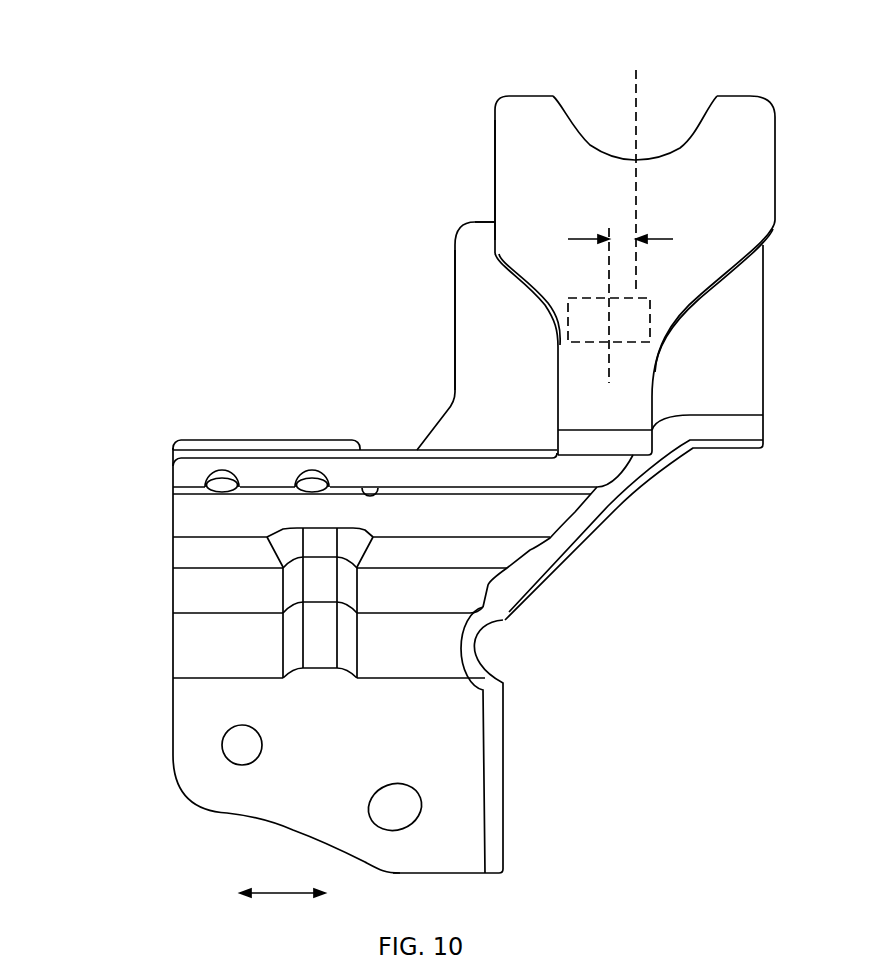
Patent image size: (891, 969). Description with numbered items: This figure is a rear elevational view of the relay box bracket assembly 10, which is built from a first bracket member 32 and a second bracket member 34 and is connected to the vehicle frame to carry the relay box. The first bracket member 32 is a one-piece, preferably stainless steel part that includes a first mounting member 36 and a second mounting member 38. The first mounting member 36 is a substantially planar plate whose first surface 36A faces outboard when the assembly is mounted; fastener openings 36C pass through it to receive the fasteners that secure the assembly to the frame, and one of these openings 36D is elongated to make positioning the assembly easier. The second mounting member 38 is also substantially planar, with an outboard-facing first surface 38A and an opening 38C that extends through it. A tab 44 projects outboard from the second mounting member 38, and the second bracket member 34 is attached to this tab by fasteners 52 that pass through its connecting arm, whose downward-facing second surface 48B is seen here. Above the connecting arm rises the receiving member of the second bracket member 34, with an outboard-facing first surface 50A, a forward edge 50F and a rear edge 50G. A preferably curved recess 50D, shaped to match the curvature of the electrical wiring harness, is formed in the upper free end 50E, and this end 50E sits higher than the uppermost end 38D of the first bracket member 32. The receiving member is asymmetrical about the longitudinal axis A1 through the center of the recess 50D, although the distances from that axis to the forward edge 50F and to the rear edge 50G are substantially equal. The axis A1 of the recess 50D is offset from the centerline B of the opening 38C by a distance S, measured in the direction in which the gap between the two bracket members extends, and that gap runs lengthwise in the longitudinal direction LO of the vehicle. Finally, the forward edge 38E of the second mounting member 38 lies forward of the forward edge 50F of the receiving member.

The relay box bracket assembly 10 is at (240, 217).
The first bracket member 32 is at (766, 378).
The second bracket member 34 is at (742, 93).
The first mounting member 36 is at (173, 717).
The first surface 36A is at (297, 782).
The fastener opening 36C is at (263, 745).
The elongated fastener opening 36D is at (405, 783).
The second mounting member 38 is at (455, 332).
The first surface 38A is at (492, 360).
The opening 38C is at (652, 320).
The uppermost end 38D is at (492, 222).
The forward edge 38E is at (455, 277).
The tab 44 is at (242, 438).
The second surface 48B is at (443, 472).
The first surface 50A is at (735, 204).
The recess 50D is at (584, 142).
The upper end 50E is at (533, 95).
The forward edge 50F is at (493, 153).
The rear edge 50G is at (776, 157).
The fasteners 52 is at (222, 487).
The longitudinal axis A1 is at (640, 105).
The centerline B is at (609, 372).
The distance S is at (620, 240).
The longitudinal direction LO is at (282, 895).